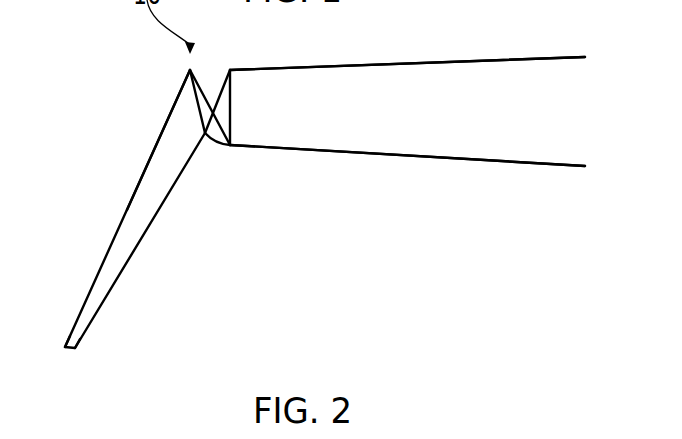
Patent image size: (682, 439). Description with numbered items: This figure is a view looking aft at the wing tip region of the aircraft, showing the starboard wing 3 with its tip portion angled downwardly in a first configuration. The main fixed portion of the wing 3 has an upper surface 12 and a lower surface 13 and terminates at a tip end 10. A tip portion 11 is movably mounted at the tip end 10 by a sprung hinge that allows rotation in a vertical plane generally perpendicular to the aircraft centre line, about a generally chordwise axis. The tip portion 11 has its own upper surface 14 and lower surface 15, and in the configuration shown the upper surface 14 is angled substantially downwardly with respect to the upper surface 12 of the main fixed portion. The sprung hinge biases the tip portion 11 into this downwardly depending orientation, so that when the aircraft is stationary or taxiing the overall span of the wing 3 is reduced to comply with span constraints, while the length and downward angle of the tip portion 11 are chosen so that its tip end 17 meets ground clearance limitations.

The starboard wing 3 is at (527, 82).
The tip end 10 is at (250, 88).
The tip portion 11 is at (142, 208).
The upper surface 12 is at (400, 63).
The lower surface 13 is at (422, 157).
The upper surface 14 is at (152, 152).
The lower surface 15 is at (175, 187).
The tip end 17 is at (68, 352).